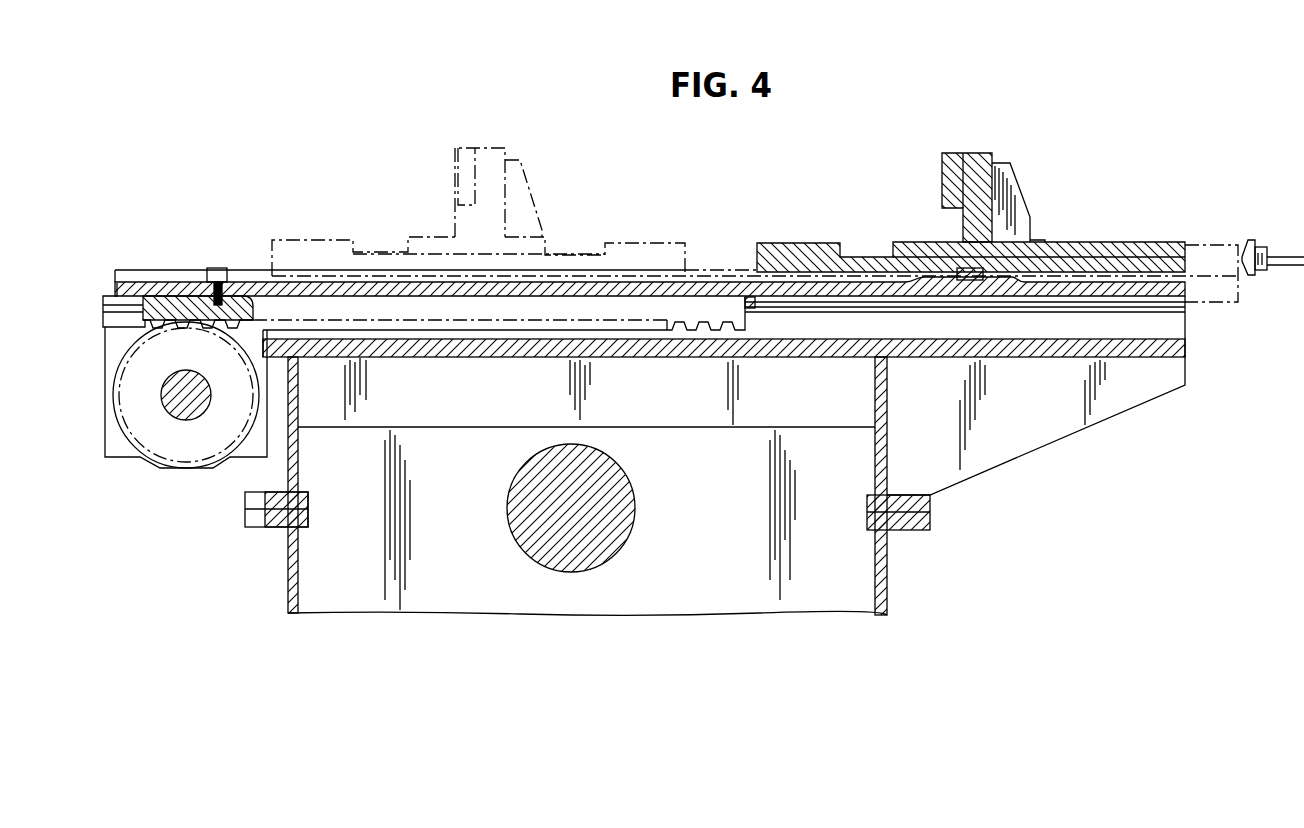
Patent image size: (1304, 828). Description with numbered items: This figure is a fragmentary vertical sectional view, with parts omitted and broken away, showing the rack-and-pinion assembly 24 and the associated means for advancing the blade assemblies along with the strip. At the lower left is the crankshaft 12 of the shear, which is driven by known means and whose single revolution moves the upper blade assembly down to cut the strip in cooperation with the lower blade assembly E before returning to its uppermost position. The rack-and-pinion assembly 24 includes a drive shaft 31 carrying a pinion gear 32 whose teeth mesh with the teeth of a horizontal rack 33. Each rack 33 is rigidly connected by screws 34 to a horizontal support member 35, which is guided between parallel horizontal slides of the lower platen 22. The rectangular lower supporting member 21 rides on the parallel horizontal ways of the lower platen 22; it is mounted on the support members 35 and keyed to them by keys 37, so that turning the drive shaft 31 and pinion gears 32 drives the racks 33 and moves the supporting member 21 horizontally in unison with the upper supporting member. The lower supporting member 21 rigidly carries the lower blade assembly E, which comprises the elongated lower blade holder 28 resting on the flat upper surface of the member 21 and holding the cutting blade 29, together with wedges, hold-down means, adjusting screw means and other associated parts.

The crankshaft 12 is at (618, 477).
The lower supporting member 21 is at (310, 240).
The lower platen 22 is at (1013, 347).
The rack-and-pinion assembly 24 is at (134, 266).
The lower blade holder 28 is at (1020, 194).
The cutting blade 29 is at (455, 166).
The drive shaft 31 is at (192, 407).
The pinion gears 32 is at (142, 365).
The horizontal racks 33 is at (150, 310).
The screws 34 is at (213, 268).
The horizontal support member 35 is at (707, 279).
The keys 37 is at (966, 268).
The lower blade assembly E is at (1143, 225).